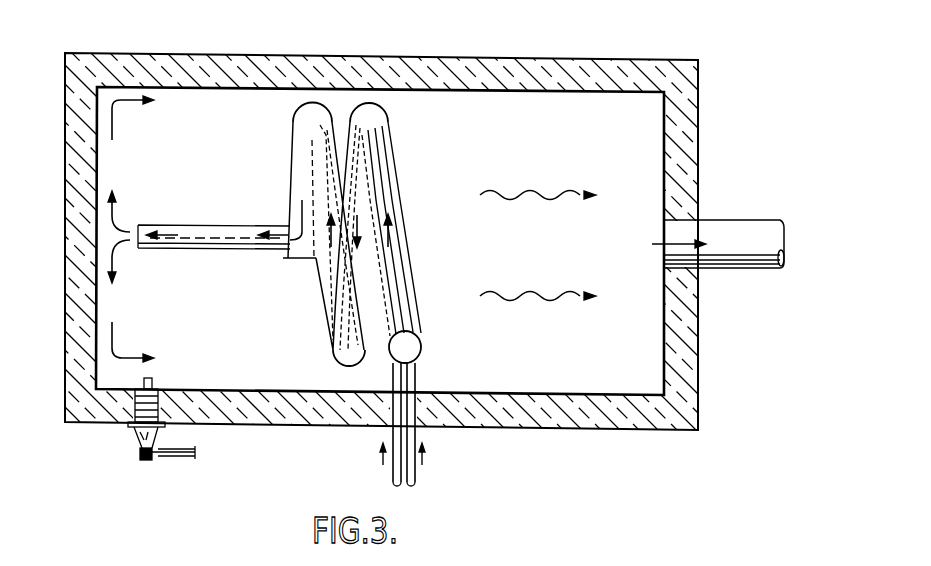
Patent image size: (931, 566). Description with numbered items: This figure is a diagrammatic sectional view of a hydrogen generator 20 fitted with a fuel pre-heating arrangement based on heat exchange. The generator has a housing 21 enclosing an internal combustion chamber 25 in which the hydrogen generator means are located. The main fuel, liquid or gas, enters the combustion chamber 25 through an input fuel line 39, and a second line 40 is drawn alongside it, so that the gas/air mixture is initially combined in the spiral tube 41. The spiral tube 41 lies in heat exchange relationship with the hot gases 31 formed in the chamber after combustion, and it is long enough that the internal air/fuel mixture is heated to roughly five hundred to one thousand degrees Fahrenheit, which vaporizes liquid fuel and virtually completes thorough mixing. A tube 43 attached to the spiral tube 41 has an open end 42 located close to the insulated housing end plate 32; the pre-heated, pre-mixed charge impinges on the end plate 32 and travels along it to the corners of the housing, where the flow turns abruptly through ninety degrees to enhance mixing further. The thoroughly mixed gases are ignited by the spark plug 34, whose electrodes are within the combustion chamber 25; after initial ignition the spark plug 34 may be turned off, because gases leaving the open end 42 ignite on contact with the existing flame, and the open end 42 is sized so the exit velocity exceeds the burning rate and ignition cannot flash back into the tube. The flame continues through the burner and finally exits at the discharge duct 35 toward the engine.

The hydrogen generator 20 is at (465, 217).
The housing 21 is at (183, 53).
The combustion chamber 25 is at (256, 110).
The hot gases 31 is at (148, 114).
The insulated housing end plate 32 is at (97, 160).
The spark plug 34 is at (133, 410).
The discharge duct 35 is at (722, 226).
The input fuel line 39 is at (392, 470).
The oxidizer supply tube 40 is at (416, 470).
The spiral tube 41 is at (394, 184).
The open end 42 is at (137, 225).
The tube 43 is at (252, 246).